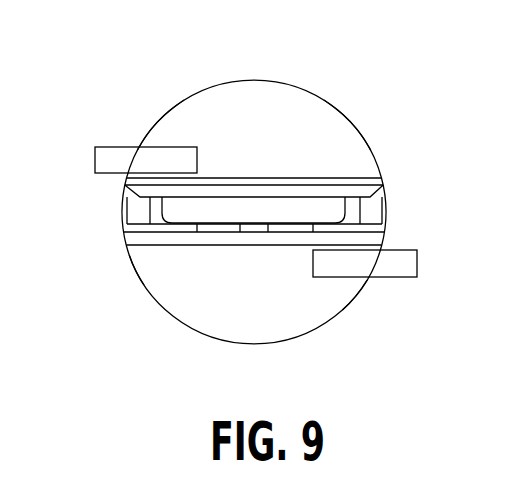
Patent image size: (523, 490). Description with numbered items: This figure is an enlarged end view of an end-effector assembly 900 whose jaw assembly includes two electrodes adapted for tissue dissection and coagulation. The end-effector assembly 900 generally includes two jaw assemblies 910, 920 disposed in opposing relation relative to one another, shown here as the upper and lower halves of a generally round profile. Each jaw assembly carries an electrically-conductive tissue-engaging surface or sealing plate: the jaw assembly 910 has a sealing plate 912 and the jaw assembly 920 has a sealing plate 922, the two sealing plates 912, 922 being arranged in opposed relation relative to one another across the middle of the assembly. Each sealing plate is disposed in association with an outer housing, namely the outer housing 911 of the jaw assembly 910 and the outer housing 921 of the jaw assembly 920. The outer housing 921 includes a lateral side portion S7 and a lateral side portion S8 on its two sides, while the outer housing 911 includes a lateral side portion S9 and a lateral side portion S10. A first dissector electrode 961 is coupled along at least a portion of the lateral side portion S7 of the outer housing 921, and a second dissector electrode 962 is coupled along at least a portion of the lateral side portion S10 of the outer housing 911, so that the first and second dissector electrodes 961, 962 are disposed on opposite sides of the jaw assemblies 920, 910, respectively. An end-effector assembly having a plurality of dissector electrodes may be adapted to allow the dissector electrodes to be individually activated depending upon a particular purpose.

The end-effector assembly 900 is at (148, 45).
The jaw assembly 910 is at (353, 112).
The outer housing 911 is at (293, 82).
The sealing plate 912 is at (375, 192).
The jaw assembly 920 is at (142, 295).
The outer housing 921 is at (190, 328).
The sealing plate 922 is at (130, 240).
The first dissector electrode 961 is at (405, 263).
The second dissector electrode 962 is at (102, 162).
The lateral side portion S7 is at (368, 295).
The lateral side portion S8 is at (125, 267).
The lateral side portion S9 is at (373, 138).
The lateral side portion S10 is at (138, 122).